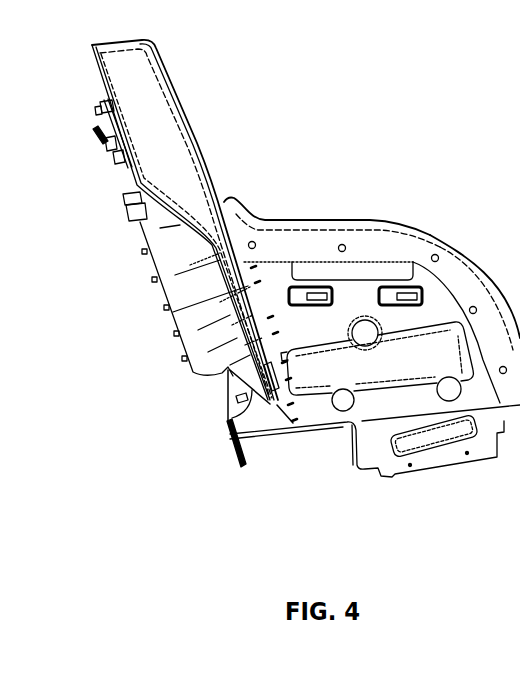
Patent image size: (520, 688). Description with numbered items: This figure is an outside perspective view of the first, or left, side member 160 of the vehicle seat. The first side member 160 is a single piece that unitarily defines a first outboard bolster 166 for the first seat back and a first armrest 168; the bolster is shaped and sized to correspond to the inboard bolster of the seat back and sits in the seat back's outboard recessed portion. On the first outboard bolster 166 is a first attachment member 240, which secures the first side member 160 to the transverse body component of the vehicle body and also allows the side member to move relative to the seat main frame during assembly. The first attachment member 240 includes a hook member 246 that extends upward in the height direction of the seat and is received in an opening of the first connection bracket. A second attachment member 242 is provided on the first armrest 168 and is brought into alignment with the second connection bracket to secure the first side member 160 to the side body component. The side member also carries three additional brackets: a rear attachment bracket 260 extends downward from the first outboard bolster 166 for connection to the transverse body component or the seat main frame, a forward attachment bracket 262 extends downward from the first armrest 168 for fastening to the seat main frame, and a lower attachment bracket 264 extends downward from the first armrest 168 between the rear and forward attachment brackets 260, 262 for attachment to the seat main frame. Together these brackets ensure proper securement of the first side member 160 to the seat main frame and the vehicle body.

The first side member 160 is at (310, 240).
The first outboard bolster 166 is at (140, 110).
The first armrest 168 is at (407, 243).
The first attachment member 240 is at (97, 142).
The second attachment member 242 is at (322, 306).
The hook member 246 is at (100, 135).
The rear attachment bracket 260 is at (232, 452).
The forward attachment bracket 262 is at (519, 466).
The lower attachment bracket 264 is at (433, 464).